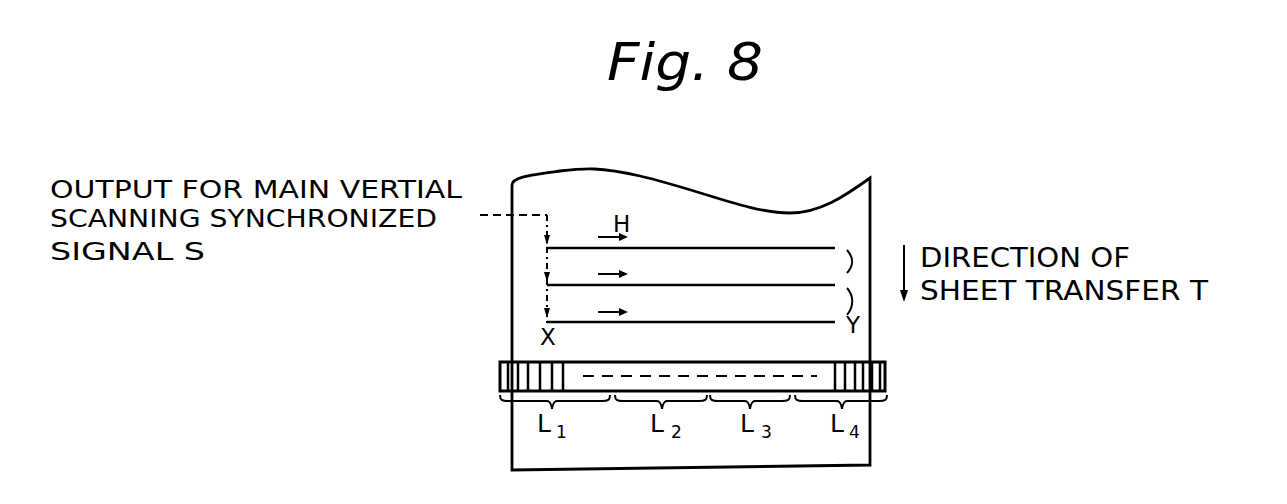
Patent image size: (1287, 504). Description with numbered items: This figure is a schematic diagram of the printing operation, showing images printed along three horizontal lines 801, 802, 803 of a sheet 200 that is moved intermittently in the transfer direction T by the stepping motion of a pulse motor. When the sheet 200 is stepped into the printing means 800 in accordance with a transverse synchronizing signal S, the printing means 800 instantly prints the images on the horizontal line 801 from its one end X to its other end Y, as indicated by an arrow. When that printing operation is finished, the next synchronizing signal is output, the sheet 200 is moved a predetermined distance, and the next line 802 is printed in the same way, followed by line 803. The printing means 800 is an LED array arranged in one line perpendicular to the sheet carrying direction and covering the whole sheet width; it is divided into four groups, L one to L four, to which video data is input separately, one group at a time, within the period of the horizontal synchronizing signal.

The sheet 200 is at (865, 438).
The printing means 800 is at (885, 376).
The horizontal line 801 is at (835, 320).
The horizontal line 802 is at (727, 285).
The horizontal line 803 is at (727, 248).